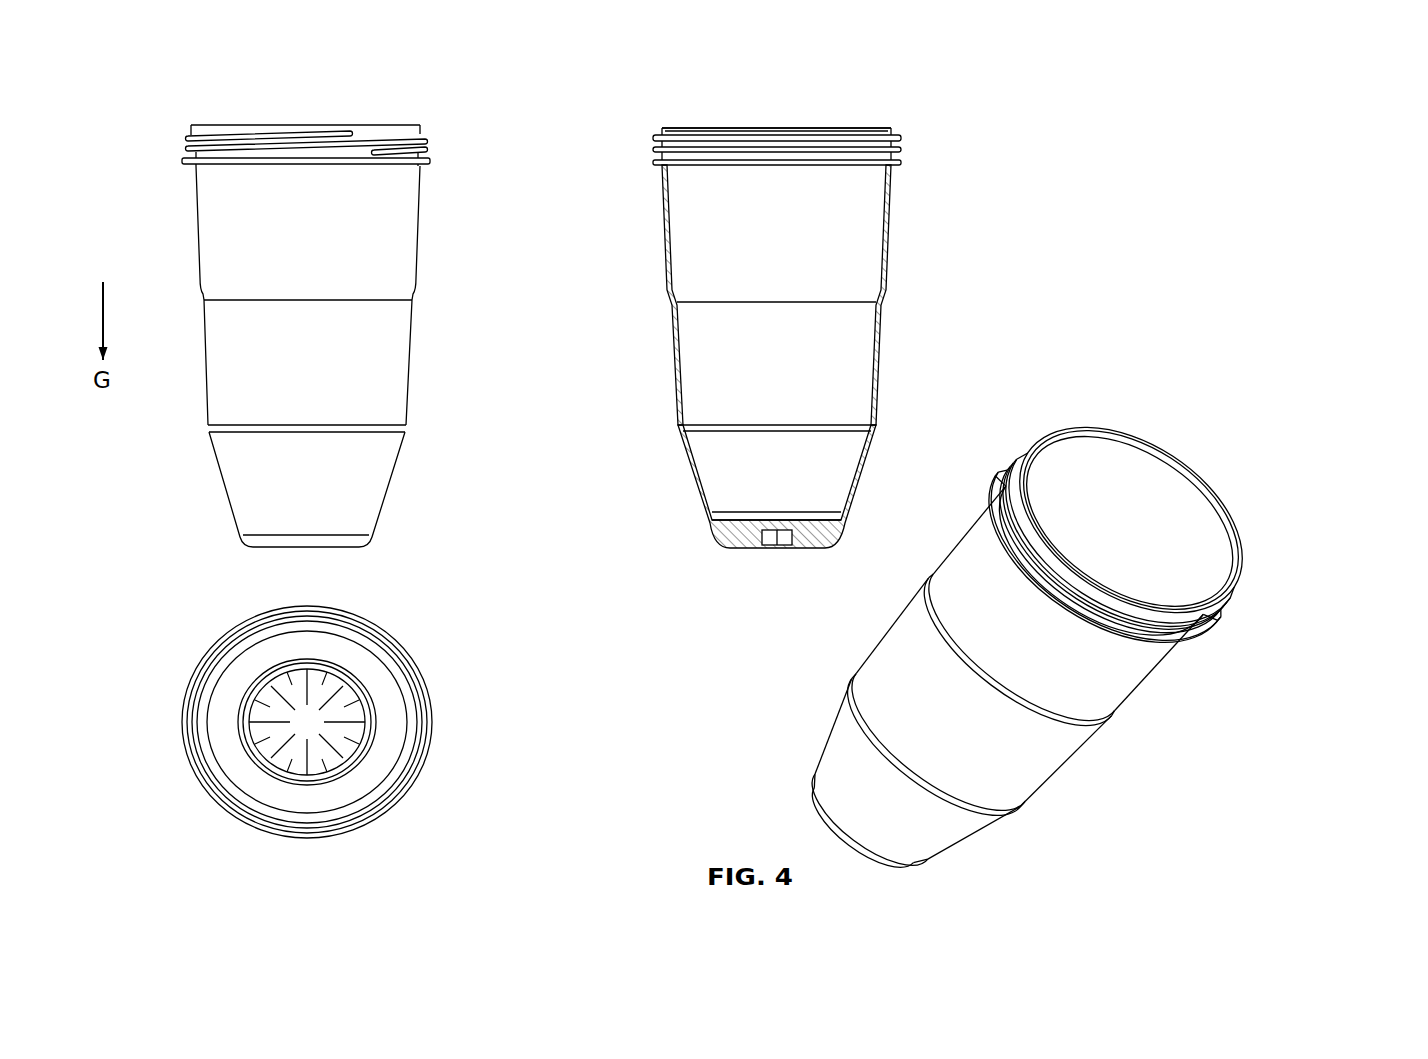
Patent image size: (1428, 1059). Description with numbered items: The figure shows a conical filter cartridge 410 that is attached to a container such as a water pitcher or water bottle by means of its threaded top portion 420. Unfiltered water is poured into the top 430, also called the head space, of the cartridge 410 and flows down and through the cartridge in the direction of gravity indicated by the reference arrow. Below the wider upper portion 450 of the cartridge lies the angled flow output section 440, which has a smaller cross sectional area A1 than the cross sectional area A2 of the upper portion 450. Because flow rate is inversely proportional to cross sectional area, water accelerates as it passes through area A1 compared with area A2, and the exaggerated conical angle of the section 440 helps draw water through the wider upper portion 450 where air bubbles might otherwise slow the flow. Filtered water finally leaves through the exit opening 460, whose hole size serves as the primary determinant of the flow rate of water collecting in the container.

The conical filter cartridge 410 is at (1237, 460).
The threaded top portion 420 is at (1015, 177).
The top (head space) of the cartridge 430 is at (848, 108).
The angled flow output section 440 is at (686, 497).
The upper portion 450 is at (424, 268).
The exit opening 460 is at (305, 722).
The cross sectional area of the angled flow output section A1 is at (367, 769).
The cross sectional area of the upper portion A2 is at (420, 683).